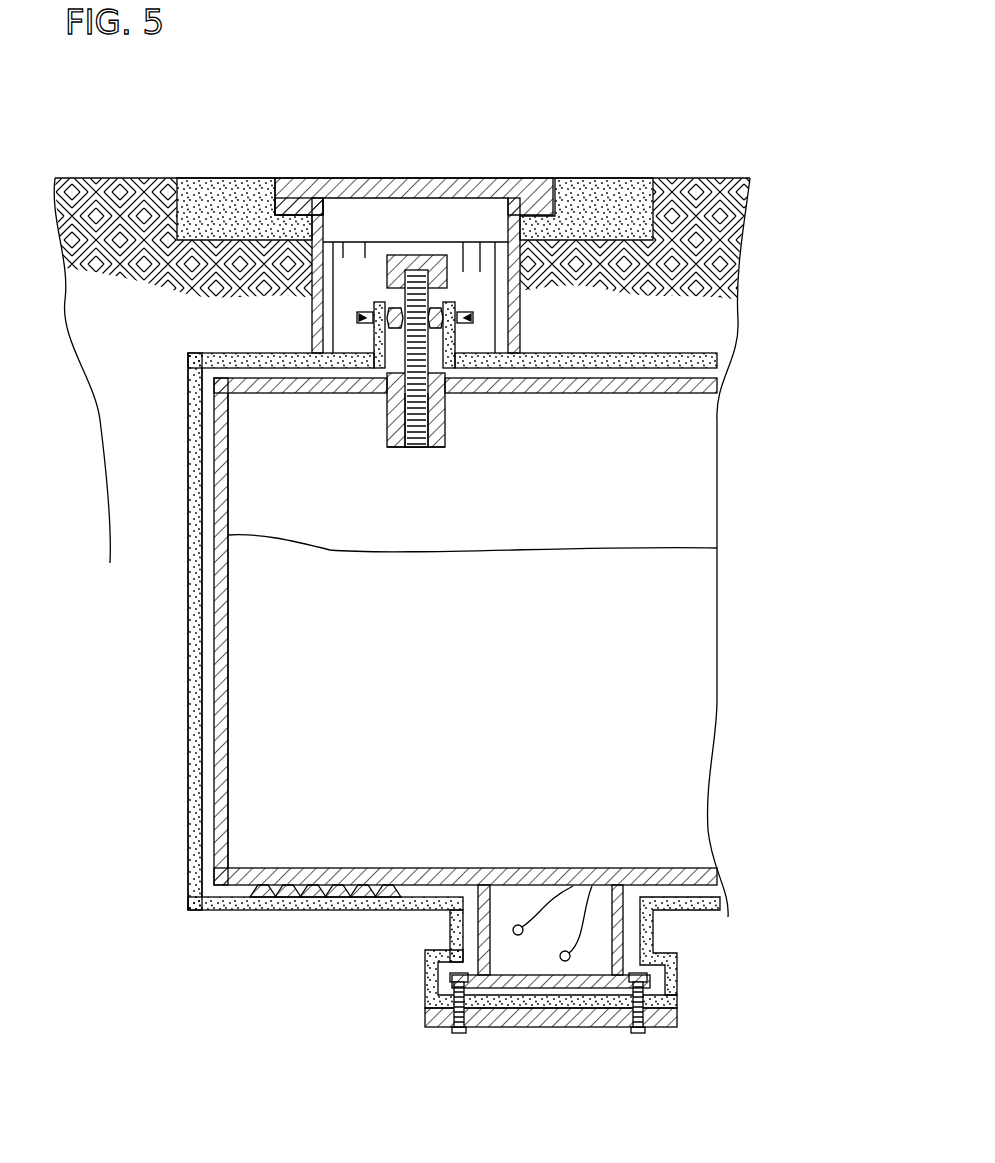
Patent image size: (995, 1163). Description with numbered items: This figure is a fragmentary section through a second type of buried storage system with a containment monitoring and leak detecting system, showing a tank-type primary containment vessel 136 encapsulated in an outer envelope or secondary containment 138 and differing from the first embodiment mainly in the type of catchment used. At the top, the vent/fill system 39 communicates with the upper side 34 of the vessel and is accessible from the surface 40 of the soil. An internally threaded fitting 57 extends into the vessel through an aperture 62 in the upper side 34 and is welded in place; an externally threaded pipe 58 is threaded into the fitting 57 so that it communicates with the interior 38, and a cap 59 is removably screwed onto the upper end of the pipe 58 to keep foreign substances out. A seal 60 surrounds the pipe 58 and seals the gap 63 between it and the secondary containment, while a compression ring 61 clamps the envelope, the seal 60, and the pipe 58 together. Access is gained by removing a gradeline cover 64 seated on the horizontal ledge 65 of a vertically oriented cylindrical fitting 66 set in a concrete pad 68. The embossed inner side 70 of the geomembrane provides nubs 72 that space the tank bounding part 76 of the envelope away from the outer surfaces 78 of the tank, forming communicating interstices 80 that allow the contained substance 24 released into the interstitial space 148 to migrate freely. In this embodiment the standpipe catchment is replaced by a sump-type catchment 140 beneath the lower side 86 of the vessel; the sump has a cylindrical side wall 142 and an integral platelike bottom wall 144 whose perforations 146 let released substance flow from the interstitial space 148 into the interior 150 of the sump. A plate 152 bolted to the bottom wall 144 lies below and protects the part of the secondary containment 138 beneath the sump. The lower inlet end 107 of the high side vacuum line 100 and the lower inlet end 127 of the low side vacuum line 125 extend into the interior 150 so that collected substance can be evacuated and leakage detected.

The surface 40 is at (107, 178).
The cylindrical fitting 66 is at (264, 184).
The horizontal ledge 65 is at (316, 196).
The gradeline cover 64 is at (455, 178).
The concrete pad 68 is at (583, 179).
The seal 60 is at (392, 308).
The cap 59 is at (425, 256).
The compression ring 61 is at (345, 312).
The gap 63 is at (392, 341).
The vent/fill system 39 is at (492, 317).
The upper side 34 is at (627, 395).
The aperture 62 is at (416, 392).
The externally threaded pipe 58 is at (444, 412).
The internally threaded fitting 57 is at (387, 438).
The interior 38 is at (627, 484).
The contained substance 24 is at (563, 536).
The outer surfaces 78 is at (214, 570).
The inner side 70 is at (202, 628).
The primary containment vessel 136 is at (243, 753).
The outer envelope 138 is at (188, 797).
The interstitial space 148 is at (196, 860).
The interstices 80 is at (322, 888).
The nubs 72 is at (353, 887).
The tank bounding part 76 is at (242, 902).
The lower side 86 is at (690, 888).
The sump-type catchment 140 is at (648, 937).
The cylindrical side wall 142 is at (452, 915).
The bottom wall 144 is at (440, 982).
The interior 150 is at (503, 953).
The perforations 146 is at (567, 980).
The plate 152 is at (670, 1040).
The lower inlet end 127 is at (570, 957).
The lower inlet end 107 is at (516, 925).
The high side vacuum line 100 is at (540, 878).
The vacuum line 125 is at (595, 885).